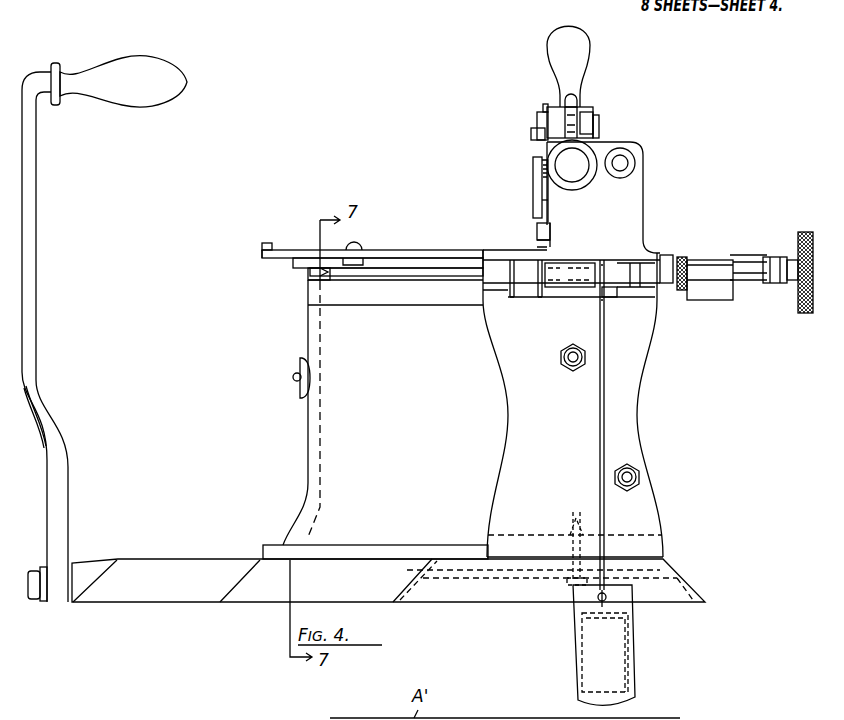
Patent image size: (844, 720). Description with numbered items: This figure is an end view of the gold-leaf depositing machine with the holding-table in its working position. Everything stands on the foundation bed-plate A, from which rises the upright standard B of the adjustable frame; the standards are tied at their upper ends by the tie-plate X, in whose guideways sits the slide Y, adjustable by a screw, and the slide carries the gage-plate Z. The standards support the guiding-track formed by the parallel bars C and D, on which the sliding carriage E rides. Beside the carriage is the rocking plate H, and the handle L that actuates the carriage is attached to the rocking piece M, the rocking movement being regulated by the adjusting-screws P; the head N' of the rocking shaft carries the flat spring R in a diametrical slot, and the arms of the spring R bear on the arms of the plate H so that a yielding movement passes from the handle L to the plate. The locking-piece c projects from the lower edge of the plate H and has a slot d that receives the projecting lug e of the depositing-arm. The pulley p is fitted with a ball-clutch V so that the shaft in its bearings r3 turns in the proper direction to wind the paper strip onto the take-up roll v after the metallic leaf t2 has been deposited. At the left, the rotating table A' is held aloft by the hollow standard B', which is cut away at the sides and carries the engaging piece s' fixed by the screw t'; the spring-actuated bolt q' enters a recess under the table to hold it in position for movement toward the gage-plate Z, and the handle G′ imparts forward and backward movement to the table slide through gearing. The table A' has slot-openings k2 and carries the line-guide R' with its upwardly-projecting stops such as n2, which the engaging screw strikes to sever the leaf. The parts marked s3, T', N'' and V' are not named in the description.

The handle G′ is at (96, 92).
The foundation bed-plate A is at (388, 559).
The rotating table A' is at (388, 244).
The upright standard B is at (573, 417).
The hollow standard B' is at (375, 419).
The line-guide R' is at (372, 235).
The rail stop s3 is at (262, 254).
The spring-actuated bolt q' is at (300, 286).
The engaging piece s' is at (399, 230).
The screw t' is at (524, 326).
The bearing r3 is at (497, 270).
The projecting lug e is at (536, 237).
The locking-piece c is at (550, 229).
The slot d is at (551, 237).
The guide plate T' is at (514, 189).
The rocking plate H is at (548, 208).
The parallel bar C is at (572, 172).
The parallel bar D is at (622, 163).
The handle L is at (580, 50).
The adjusting-screw P is at (566, 104).
The rocking piece M is at (579, 114).
The sliding carriage E is at (586, 120).
The head of rocking shaft N' is at (618, 122).
The clamp jaw bracket N'' is at (518, 115).
The flat spring R is at (512, 129).
The take-up roll v is at (520, 284).
The pulley p is at (590, 285).
The rod collar V' is at (615, 307).
The ball-clutch V is at (610, 425).
The gage-plate Z is at (665, 255).
The tie-plate X is at (701, 300).
The slide Y is at (740, 255).
The metallic leaf t2 is at (805, 313).
The slot-opening k2 is at (338, 718).
The stop n2 is at (557, 718).